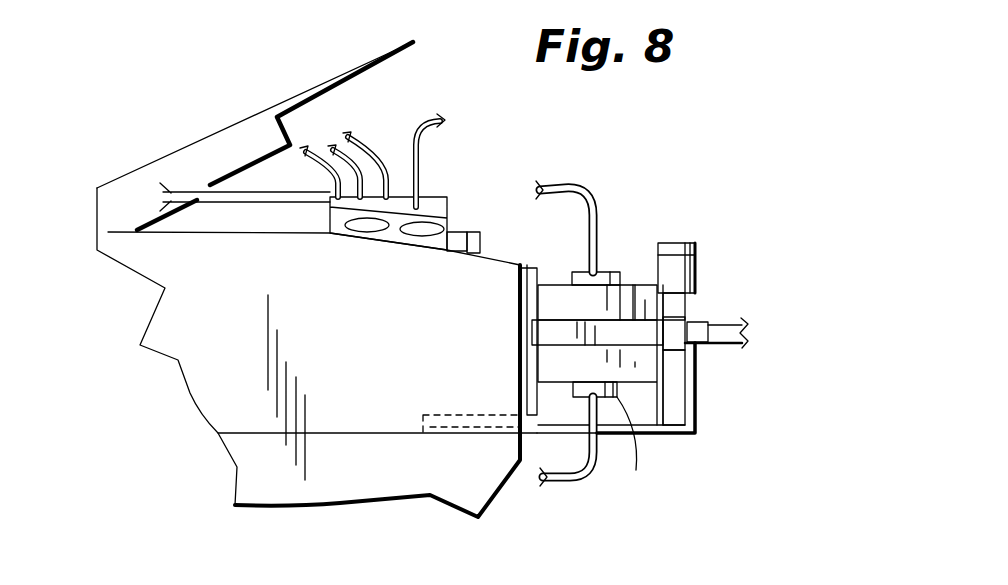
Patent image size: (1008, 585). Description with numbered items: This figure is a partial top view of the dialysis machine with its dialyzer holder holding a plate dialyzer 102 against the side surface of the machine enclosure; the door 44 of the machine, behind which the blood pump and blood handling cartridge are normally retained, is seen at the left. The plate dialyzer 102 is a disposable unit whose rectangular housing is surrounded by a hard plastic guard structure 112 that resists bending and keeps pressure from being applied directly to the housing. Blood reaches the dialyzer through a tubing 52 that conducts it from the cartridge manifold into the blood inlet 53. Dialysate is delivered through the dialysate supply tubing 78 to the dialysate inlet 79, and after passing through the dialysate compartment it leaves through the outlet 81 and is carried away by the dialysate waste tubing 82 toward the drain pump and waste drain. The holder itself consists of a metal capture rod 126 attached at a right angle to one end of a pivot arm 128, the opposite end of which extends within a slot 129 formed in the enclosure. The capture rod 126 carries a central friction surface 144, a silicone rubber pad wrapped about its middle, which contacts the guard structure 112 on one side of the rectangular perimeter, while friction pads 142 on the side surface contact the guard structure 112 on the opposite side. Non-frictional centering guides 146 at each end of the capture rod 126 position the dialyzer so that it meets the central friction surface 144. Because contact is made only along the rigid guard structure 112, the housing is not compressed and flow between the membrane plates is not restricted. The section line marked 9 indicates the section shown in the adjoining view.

The door 44 is at (245, 112).
The dialysate supply tubing 78 is at (567, 181).
The dialysate inlet 79 is at (639, 285).
The dialysate outlet 81 is at (636, 470).
The dialysate waste tubing 82 is at (572, 480).
The plate dialyzer 102 is at (633, 283).
The guard structure 112 is at (568, 333).
The capture rod 126 is at (683, 243).
The pivot arm 128 is at (677, 437).
The slot 129 is at (440, 412).
The friction pads 142 is at (531, 283).
The central friction surface 144 is at (680, 313).
The centering guides 146 is at (680, 268).
The tubing 52 is at (745, 343).
The blood inlet 53 is at (686, 327).
The section line 9- 9 is at (427, 477).